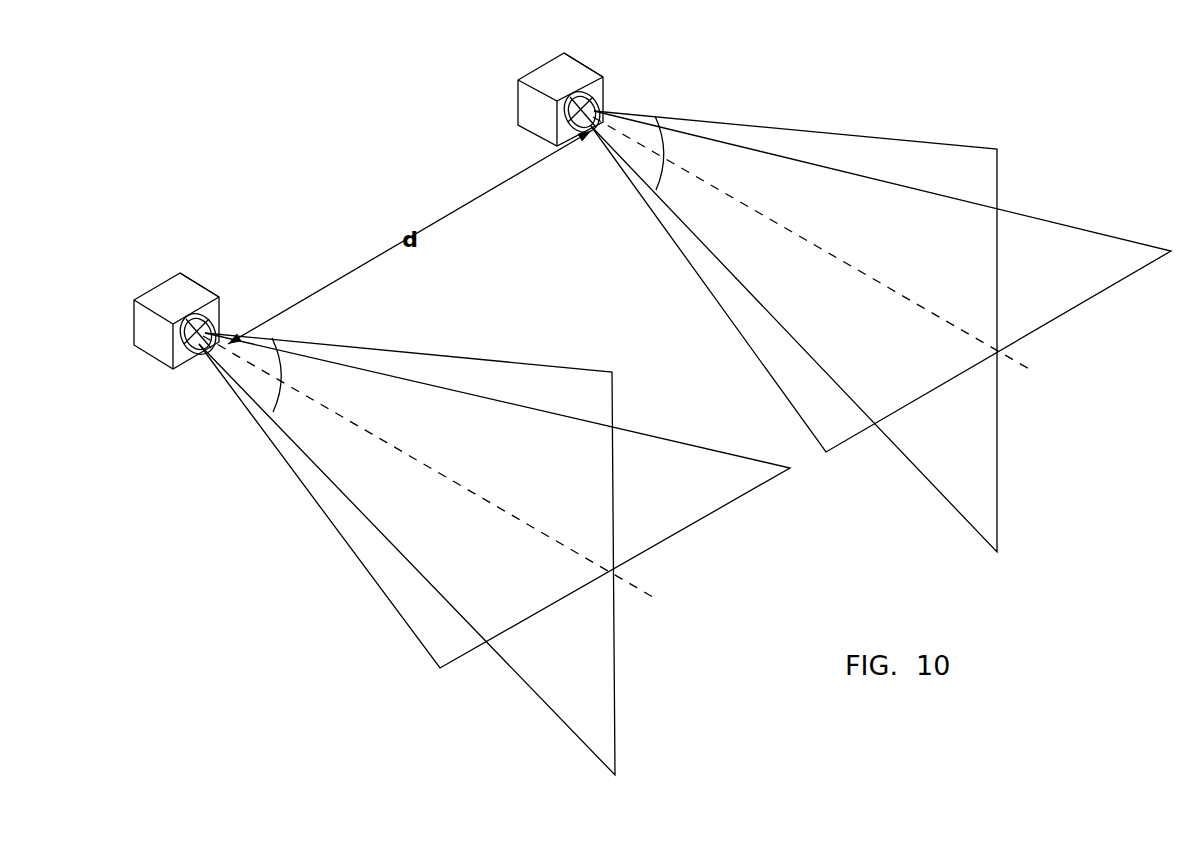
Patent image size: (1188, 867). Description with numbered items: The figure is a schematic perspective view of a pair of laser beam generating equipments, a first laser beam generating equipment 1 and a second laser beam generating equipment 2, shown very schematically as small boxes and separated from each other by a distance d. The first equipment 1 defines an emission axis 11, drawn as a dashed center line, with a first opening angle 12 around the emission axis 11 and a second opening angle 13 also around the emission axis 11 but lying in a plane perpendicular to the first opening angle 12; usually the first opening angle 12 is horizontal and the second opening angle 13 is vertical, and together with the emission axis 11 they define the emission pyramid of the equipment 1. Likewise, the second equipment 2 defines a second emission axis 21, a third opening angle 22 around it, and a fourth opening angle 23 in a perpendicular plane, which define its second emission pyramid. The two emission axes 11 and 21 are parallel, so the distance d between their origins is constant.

The laser beam generating equipment 1 is at (558, 74).
The second laser beam generating equipment 2 is at (170, 298).
The emission axis 11 is at (1041, 377).
The first opening angle 12 is at (670, 132).
The second opening angle 13 is at (658, 182).
The second emission axis 21 is at (658, 595).
The third opening angle 22 is at (298, 356).
The fourth opening angle 23 is at (278, 402).